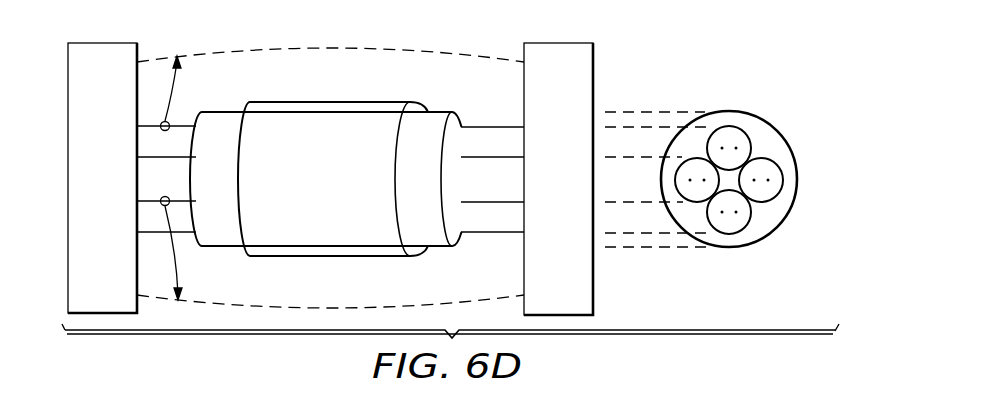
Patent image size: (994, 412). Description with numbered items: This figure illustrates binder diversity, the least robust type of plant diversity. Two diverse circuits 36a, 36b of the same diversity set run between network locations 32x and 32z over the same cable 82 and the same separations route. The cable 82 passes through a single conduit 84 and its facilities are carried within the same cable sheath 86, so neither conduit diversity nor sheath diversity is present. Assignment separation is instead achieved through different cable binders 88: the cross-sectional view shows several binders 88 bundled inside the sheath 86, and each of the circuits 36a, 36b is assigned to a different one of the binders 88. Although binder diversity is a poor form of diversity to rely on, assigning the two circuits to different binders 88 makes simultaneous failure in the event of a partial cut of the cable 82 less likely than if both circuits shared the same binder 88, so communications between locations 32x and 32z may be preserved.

The network location 32x is at (86, 190).
The network location 32z is at (543, 190).
The circuit 36a is at (250, 50).
The circuit 36b is at (213, 303).
The cable 82 is at (406, 190).
The conduit 84 is at (304, 189).
The cable sheath 86 is at (446, 248).
The cable binder 88 is at (488, 127).